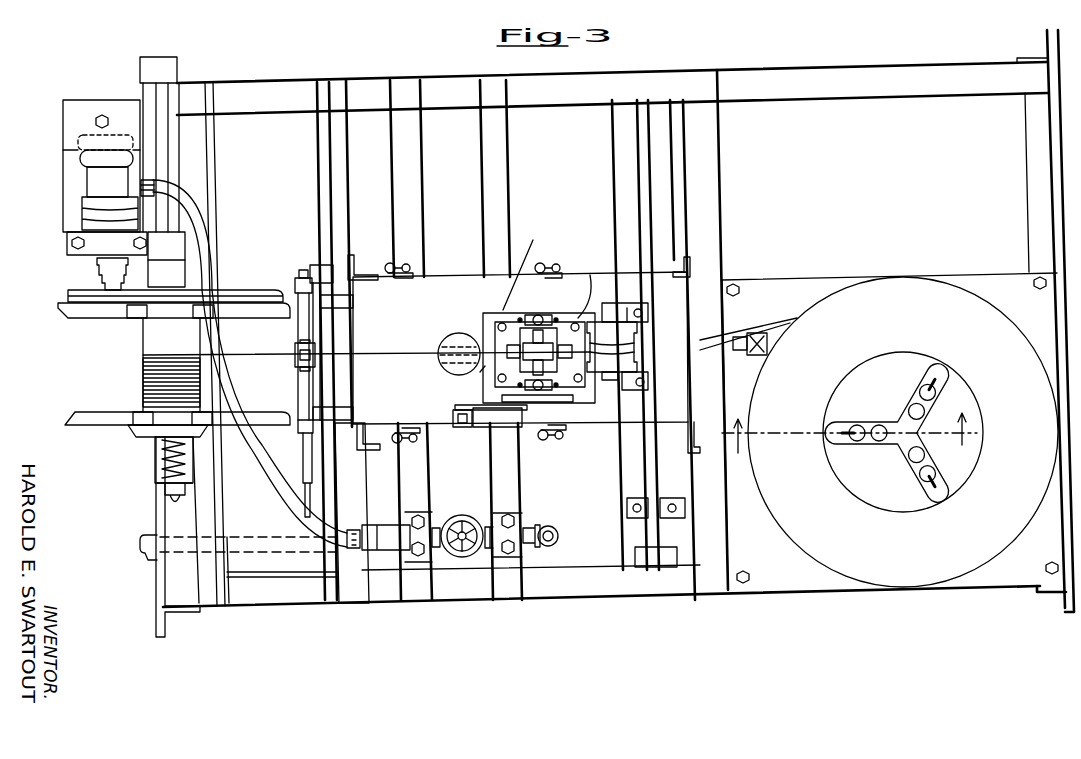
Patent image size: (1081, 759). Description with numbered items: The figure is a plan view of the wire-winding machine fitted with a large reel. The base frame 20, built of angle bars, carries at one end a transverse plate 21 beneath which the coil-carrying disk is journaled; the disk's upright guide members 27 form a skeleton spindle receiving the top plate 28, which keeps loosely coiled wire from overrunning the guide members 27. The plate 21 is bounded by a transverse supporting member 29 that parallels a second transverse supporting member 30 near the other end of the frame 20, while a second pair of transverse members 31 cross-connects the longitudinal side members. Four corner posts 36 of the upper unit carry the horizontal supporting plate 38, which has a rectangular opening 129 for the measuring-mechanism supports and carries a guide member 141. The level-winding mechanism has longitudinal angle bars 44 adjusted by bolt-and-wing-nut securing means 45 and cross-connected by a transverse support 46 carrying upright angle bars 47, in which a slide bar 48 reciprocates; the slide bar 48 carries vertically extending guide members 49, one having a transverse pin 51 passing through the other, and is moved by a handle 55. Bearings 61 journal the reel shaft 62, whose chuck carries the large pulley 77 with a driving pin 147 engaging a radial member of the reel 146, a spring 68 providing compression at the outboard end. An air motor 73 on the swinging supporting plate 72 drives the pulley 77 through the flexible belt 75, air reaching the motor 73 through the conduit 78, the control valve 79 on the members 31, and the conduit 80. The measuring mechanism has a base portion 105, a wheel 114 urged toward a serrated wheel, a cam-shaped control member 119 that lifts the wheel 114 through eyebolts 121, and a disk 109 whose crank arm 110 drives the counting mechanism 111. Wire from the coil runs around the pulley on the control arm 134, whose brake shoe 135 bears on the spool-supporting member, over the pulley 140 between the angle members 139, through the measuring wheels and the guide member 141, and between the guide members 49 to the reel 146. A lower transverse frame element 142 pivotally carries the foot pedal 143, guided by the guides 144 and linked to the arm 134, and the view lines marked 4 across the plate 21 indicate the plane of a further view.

The section line 4- 4 is at (849, 444).
The base frame 20 is at (929, 65).
The transverse plate 21 is at (1045, 320).
The upright guide members 27 is at (862, 424).
The top plate 28 is at (990, 359).
The transverse supporting member 29 is at (709, 226).
The second transverse supporting member 30 is at (326, 120).
The transverse members 31 is at (487, 163).
The corner posts 36 is at (355, 256).
The horizontal supporting plate 38 is at (435, 309).
The angle bars 44 is at (345, 312).
The securing means 45 is at (410, 266).
The transverse support 46 is at (316, 266).
The upright angle bars 47 is at (296, 278).
The slide bar 48 is at (307, 445).
The guide members 49 is at (296, 366).
The transverse pin 51 is at (298, 385).
The handle 55 is at (312, 505).
The bearing 61 is at (160, 64).
The reel shaft 62 is at (160, 108).
The spring 68 is at (160, 466).
The supporting plate 72 is at (75, 186).
The air motor 73 is at (100, 182).
The driving belt 75 is at (62, 305).
The pulley 77 is at (84, 298).
The conduit 78 is at (146, 556).
The control valve 79 is at (462, 515).
The conduit 80 is at (188, 202).
The base portion 105 is at (589, 287).
The disk 109 is at (558, 398).
The crank arm 110 is at (491, 417).
The counting mechanism 111 is at (453, 420).
The wheel 114 is at (520, 316).
The control member 119 is at (548, 328).
The eyebolt 121 is at (484, 372).
The rectangular opening 129 is at (526, 265).
The control arm 134 is at (790, 320).
The brake shoe 135 is at (792, 318).
The angle members 139 is at (638, 304).
The sheave or pulley 140 is at (598, 330).
The guide member 141 is at (461, 341).
The lower transverse frame element 142 is at (648, 462).
The foot pedal 143 is at (655, 552).
The guides 144 is at (630, 520).
The reel 146 is at (120, 310).
The driving pin 147 is at (198, 320).